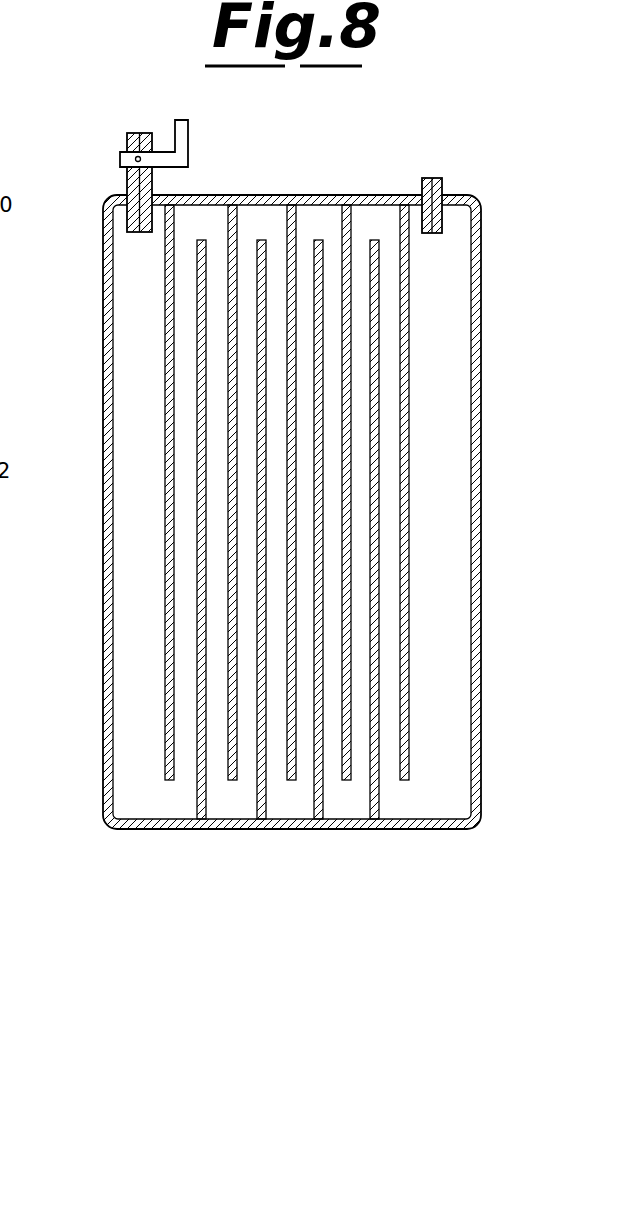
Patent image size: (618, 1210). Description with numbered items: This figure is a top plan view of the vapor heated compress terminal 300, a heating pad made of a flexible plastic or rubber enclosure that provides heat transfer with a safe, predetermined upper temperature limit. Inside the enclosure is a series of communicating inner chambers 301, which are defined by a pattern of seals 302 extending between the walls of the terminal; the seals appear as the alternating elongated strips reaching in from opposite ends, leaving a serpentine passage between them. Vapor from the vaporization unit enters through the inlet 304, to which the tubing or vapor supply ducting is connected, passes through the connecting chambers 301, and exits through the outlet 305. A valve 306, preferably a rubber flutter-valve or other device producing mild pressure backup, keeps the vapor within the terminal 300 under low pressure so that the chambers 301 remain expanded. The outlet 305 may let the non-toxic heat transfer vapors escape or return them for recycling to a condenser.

The vapor heated compress terminal 300 is at (97, 737).
The communicating inner chambers 301 is at (272, 502).
The seals 302 is at (290, 650).
The inlet 304 is at (441, 185).
The outlet 305 is at (127, 182).
The valve 306 is at (182, 142).